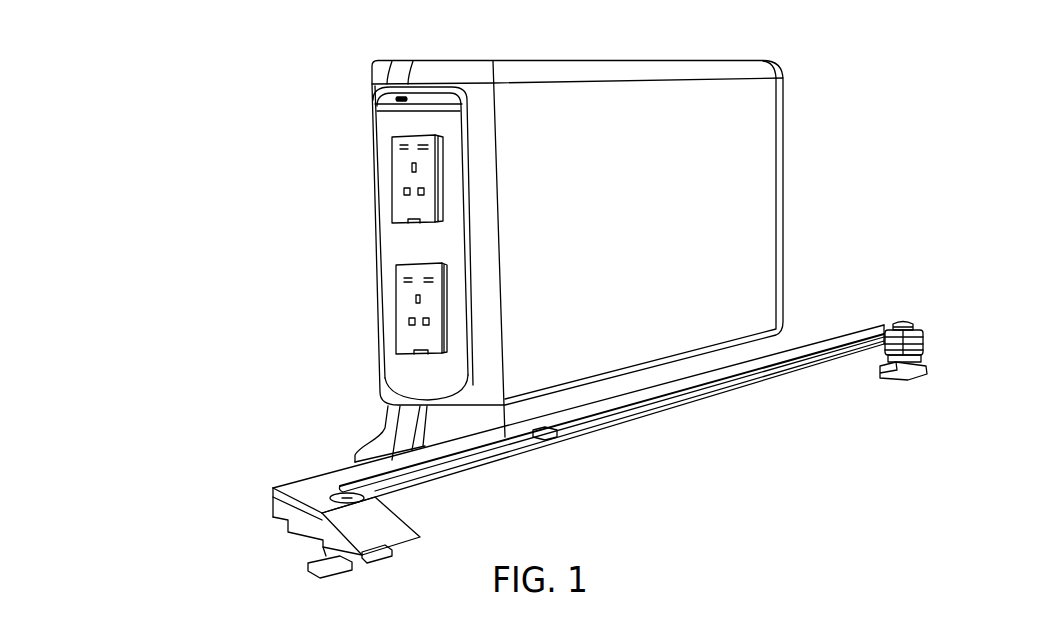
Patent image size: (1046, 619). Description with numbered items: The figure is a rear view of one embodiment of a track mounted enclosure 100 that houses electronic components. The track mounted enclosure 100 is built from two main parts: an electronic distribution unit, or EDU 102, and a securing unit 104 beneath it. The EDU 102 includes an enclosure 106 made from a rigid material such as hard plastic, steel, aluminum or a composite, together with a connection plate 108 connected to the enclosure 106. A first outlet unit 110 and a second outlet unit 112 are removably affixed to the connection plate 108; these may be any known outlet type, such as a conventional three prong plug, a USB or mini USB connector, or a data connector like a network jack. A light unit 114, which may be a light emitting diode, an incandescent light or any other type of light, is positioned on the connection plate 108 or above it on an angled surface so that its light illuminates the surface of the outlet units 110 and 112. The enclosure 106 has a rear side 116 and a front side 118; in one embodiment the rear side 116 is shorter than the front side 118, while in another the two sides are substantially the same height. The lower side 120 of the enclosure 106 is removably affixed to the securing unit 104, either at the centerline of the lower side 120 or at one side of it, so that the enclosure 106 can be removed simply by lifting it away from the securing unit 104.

The track mounted enclosure 100 is at (233, 72).
The electronic distribution unit 102 is at (370, 131).
The securing unit 104 is at (270, 527).
The enclosure 106 is at (428, 36).
The connection plate 108 is at (402, 238).
The first outlet unit 110 is at (447, 182).
The second outlet unit 112 is at (394, 298).
The light unit 114 is at (412, 99).
The rear side 116 is at (377, 320).
The front side 118 is at (793, 126).
The lower side 120 is at (367, 432).